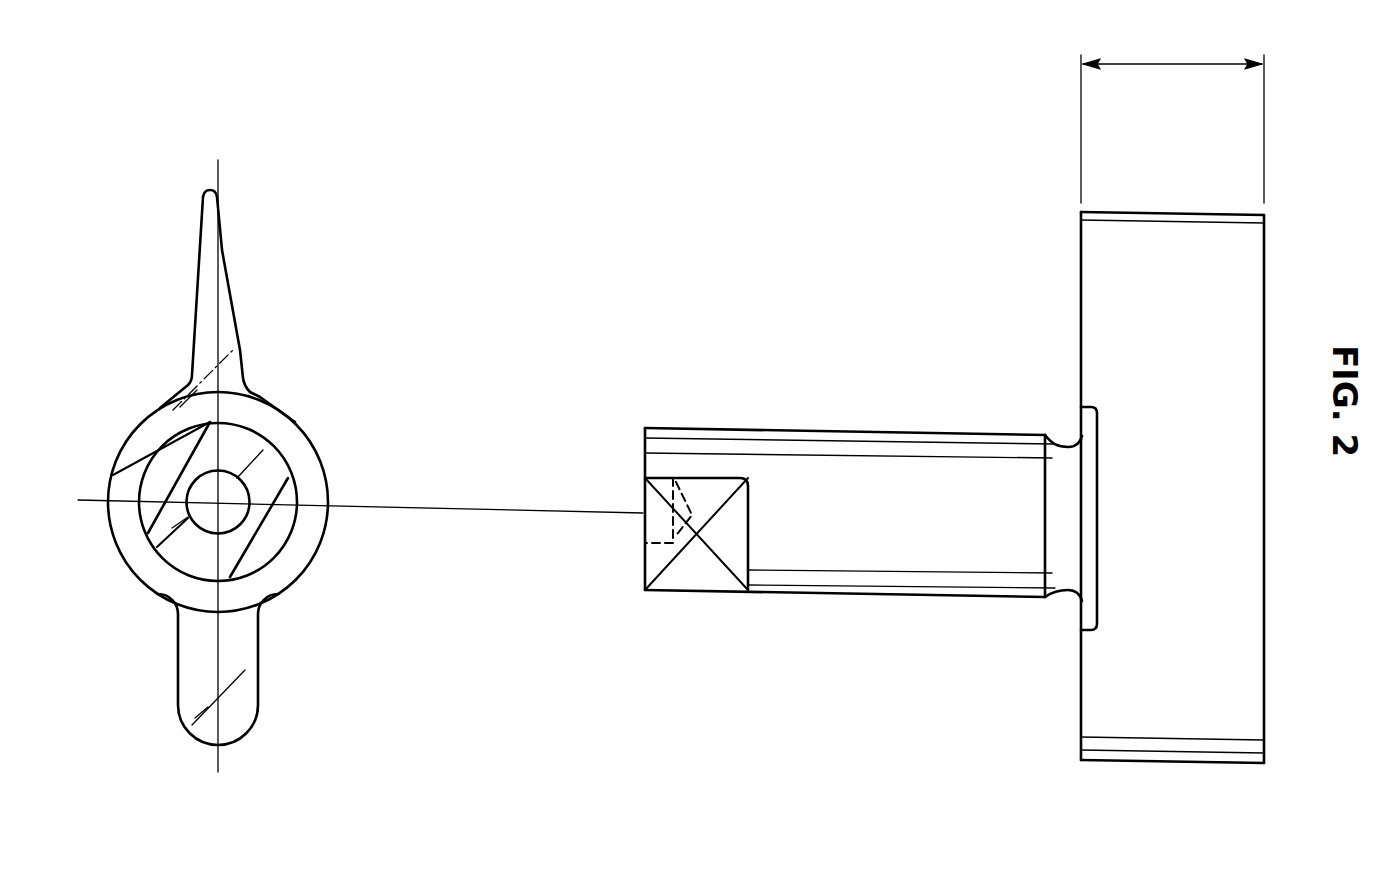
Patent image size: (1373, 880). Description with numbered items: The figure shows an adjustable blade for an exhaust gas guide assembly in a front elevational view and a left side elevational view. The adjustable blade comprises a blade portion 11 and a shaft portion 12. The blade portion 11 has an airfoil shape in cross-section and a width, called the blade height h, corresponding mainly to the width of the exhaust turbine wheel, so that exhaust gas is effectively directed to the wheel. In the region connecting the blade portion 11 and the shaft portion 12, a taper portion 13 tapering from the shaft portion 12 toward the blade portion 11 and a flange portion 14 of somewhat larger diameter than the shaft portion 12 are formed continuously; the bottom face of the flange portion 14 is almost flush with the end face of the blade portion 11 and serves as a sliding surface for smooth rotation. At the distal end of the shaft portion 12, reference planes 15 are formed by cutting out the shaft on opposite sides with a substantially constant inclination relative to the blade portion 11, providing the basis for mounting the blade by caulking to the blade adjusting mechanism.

The blade portion 11 is at (227, 288).
The shaft portion 12 is at (175, 572).
The taper portion 13 is at (1064, 600).
The flange portion 14 is at (297, 440).
The reference planes 15 is at (187, 452).